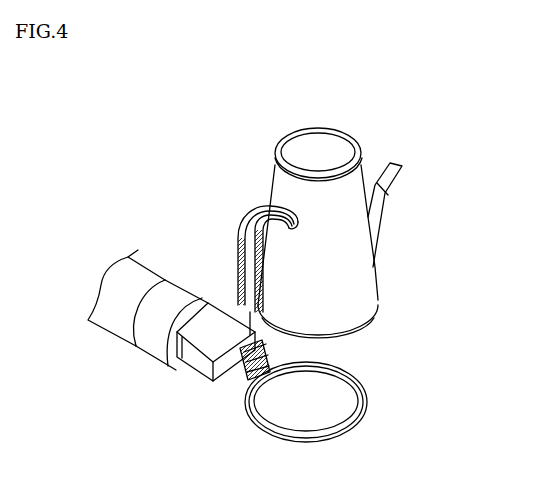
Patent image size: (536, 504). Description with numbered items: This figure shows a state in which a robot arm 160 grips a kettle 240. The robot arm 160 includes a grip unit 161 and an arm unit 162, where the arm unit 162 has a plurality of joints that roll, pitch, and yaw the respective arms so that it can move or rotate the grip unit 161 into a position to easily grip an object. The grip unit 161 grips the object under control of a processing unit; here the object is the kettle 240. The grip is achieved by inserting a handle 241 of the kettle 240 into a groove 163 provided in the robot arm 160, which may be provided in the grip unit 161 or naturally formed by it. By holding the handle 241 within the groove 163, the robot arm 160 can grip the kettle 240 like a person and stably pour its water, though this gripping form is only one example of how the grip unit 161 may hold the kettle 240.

The kettle 240 is at (343, 122).
The handle 241 is at (250, 219).
The robot arm 160 is at (142, 385).
The grip unit 161 is at (370, 412).
The arm unit 162 is at (87, 322).
The groove 163 is at (243, 387).